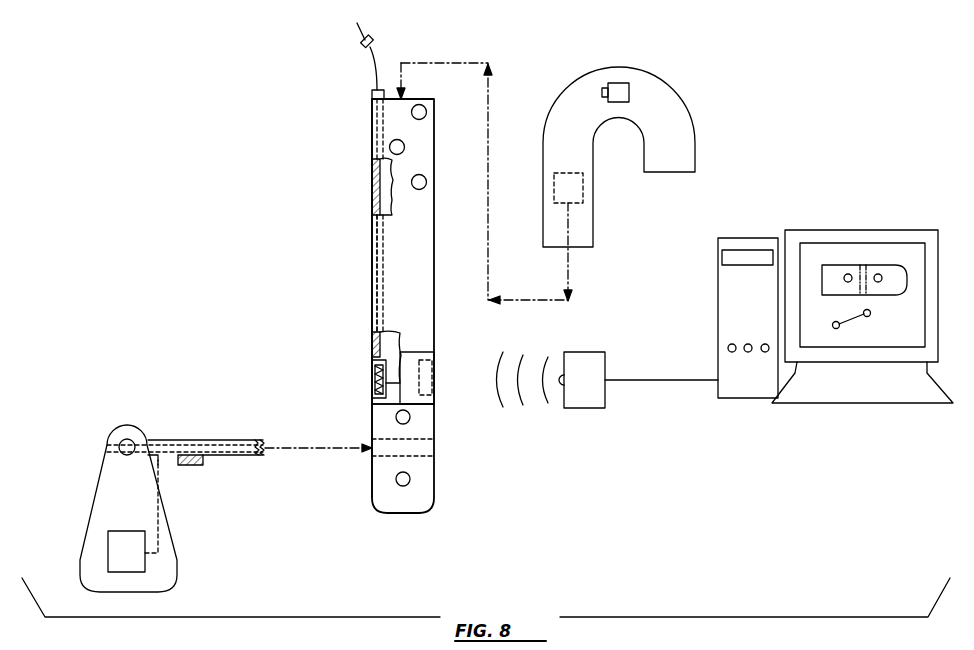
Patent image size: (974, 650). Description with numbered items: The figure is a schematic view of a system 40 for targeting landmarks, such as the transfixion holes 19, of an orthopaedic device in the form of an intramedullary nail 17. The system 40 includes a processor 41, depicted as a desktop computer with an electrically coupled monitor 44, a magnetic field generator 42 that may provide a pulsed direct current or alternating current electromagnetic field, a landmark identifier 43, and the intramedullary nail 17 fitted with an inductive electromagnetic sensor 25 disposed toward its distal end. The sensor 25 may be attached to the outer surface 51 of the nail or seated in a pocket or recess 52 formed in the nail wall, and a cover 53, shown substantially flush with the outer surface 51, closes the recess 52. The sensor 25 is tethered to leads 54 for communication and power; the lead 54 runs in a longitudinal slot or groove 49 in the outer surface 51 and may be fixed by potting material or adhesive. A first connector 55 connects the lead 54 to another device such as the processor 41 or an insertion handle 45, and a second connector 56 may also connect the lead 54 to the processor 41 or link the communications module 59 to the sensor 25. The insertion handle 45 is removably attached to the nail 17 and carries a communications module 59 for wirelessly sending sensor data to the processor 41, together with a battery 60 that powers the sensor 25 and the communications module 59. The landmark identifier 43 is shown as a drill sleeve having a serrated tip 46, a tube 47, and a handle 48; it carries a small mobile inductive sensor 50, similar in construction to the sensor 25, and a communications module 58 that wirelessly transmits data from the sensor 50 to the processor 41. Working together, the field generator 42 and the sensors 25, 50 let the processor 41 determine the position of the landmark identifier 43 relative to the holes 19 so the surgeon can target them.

The intramedullary nail 17 is at (436, 132).
The transfixion holes 19 is at (397, 151).
The inductive electromagnetic sensor 25 is at (372, 372).
The system 40 is at (715, 216).
The processor 41 is at (718, 272).
The magnetic field generator 42 is at (605, 360).
The landmark identifier 43 is at (198, 479).
The monitor 44 is at (845, 230).
The insertion handle 45 is at (697, 156).
The serrated tip 46 is at (262, 440).
The tube 47 is at (170, 440).
The handle 48 is at (177, 560).
The longitudinal slot or groove 49 is at (372, 240).
The small mobile inductive sensor 50 is at (204, 462).
The outer surface 51 is at (372, 283).
The pocket or recess 52 is at (372, 400).
The cover 53 is at (410, 346).
The leads 54 is at (372, 193).
The first connector 55 is at (372, 95).
The second connector 56 is at (371, 40).
The communications module 58 is at (135, 531).
The communications module 59 is at (565, 173).
The battery 60 is at (630, 92).